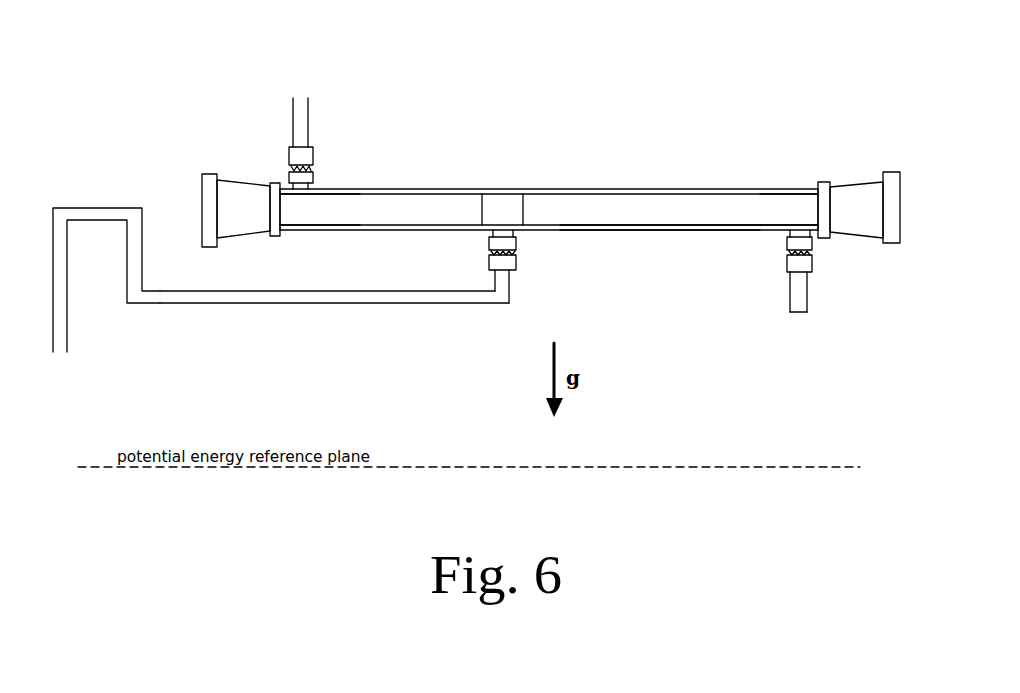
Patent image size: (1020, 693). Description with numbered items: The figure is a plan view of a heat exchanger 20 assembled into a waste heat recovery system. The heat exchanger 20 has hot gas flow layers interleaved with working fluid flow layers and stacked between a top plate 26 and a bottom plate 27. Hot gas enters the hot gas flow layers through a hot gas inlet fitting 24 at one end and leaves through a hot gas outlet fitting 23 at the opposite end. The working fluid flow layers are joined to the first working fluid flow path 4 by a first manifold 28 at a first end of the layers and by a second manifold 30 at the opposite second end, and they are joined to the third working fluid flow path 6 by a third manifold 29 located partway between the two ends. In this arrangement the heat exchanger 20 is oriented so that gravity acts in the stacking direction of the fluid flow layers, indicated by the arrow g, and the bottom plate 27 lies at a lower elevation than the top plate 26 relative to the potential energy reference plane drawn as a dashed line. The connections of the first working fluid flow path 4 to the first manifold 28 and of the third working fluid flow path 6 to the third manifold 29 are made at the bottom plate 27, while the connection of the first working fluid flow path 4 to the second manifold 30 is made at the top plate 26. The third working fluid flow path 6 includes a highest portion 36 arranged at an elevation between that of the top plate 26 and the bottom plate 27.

The heat exchanger 20 is at (476, 194).
The first working fluid flow path 4 is at (302, 133).
The third working fluid flow path 6 is at (415, 298).
The hot gas outlet fitting 23 is at (862, 193).
The hot gas inlet fitting 24 is at (242, 220).
The top plate 26 is at (413, 190).
The bottom plate 27 is at (622, 225).
The first manifold 28 is at (795, 213).
The third manifold 29 is at (502, 203).
The second manifold 30 is at (298, 215).
The highest portion 36 is at (90, 210).